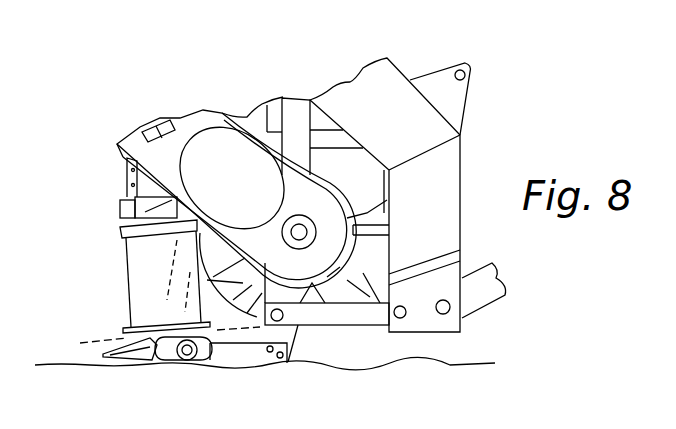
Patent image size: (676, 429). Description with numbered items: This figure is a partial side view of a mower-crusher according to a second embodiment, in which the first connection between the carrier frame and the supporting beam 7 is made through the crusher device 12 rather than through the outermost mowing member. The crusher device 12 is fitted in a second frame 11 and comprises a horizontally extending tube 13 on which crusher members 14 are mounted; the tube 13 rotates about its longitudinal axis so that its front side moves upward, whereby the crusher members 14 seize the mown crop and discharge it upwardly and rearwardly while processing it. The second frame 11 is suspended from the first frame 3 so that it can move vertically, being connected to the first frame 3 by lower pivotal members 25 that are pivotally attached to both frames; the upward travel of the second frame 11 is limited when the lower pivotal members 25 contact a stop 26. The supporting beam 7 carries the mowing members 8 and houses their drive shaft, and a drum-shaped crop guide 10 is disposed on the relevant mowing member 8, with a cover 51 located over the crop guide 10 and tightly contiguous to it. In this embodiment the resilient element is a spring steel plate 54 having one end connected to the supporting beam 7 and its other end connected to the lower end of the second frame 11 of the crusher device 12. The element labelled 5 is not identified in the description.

The first frame 3 is at (403, 60).
The second frame 11 is at (317, 62).
The crusher device 12 is at (375, 222).
The stop 26 is at (390, 268).
The tube 13 is at (288, 220).
The cover 51 is at (123, 232).
The drum-shaped crop guide 10 is at (130, 270).
The crusher members 14 is at (217, 280).
The mowing members 8 is at (119, 325).
The supporting beam 7 is at (157, 361).
The spring steel plate 54 is at (248, 358).
The lower pivotal members 25 is at (363, 315).
The pivot hole 5 is at (443, 314).